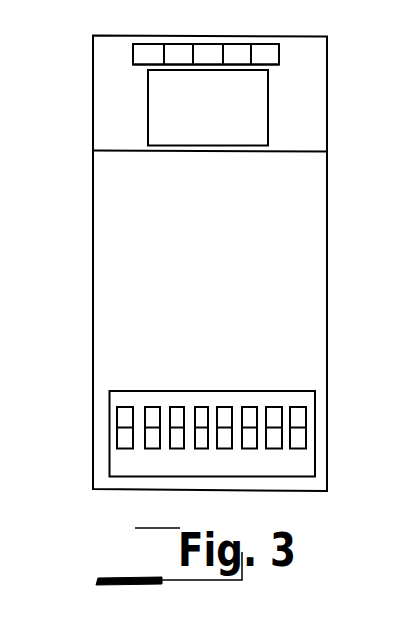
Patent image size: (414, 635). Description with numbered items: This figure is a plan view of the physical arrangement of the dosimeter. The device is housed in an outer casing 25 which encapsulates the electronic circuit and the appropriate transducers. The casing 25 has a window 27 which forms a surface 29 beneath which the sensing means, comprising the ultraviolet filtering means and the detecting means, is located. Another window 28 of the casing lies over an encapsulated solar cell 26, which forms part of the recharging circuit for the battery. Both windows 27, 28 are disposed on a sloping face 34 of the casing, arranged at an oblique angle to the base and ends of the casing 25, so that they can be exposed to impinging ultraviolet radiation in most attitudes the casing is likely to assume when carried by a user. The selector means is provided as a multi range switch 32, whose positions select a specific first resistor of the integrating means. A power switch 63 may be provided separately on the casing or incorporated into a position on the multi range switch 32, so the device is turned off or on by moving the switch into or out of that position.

The outer casing 25 is at (115, 50).
The solar cell 26 is at (258, 53).
The window 27 is at (162, 114).
The window 28 is at (133, 64).
The surface 29 is at (241, 95).
The multi range switch 32 is at (307, 400).
The sloping face 34 is at (308, 125).
The power switch 63 is at (122, 420).